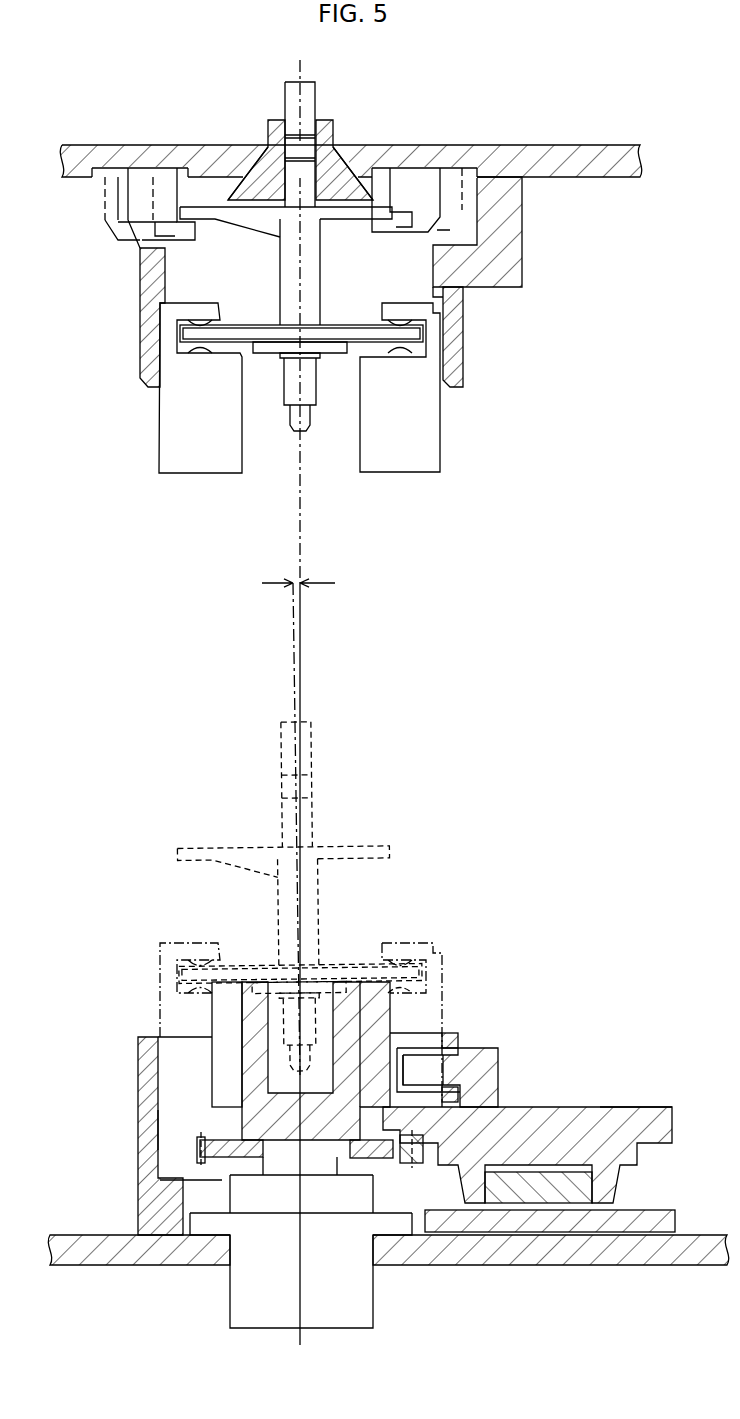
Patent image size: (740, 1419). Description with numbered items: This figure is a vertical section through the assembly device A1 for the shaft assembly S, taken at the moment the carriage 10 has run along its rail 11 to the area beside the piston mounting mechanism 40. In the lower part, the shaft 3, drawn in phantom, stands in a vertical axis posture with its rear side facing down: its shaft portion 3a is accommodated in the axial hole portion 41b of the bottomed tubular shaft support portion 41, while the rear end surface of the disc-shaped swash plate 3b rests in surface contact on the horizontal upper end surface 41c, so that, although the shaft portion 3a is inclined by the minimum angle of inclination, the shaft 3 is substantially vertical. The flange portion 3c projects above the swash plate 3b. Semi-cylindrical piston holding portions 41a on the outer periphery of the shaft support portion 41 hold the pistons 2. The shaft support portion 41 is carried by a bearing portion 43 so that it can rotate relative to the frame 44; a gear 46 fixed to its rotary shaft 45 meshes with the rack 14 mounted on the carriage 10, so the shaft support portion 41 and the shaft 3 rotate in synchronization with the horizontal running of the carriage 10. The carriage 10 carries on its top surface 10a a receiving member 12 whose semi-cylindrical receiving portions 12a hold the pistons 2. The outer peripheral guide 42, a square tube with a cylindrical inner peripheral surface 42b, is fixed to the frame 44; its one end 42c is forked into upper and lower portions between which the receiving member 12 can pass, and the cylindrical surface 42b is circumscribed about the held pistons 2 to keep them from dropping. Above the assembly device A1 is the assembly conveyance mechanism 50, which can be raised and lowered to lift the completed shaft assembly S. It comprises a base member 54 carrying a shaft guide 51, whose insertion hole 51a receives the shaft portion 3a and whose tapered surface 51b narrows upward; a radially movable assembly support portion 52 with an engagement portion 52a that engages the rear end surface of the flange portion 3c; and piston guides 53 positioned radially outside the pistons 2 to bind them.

The piston 2 is at (172, 428).
The shaft 3 is at (296, 576).
The shaft portion 3a is at (318, 296).
The swash plate 3b is at (247, 327).
The flange portion 3c is at (240, 220).
The carriage 10 is at (587, 1096).
The top surface 10a is at (647, 1106).
The rail 11 is at (560, 1203).
The receiving member 12 is at (498, 1090).
The receiving portion 12a is at (436, 1070).
The rack 14 is at (413, 1163).
The piston mounting mechanism 40 is at (107, 1033).
The shaft support portion 41 is at (253, 1058).
The piston holding portion 41a is at (240, 1078).
The hole portion 41b is at (350, 1010).
The upper end surface 41c is at (368, 968).
The outer peripheral guide 42 is at (140, 1115).
The inner peripheral surface 42b is at (163, 1130).
The one end 42c is at (458, 1040).
The bearing portion 43 is at (240, 1290).
The frame 44 is at (482, 1255).
The rotary shaft 45 is at (282, 1167).
The gear 46 is at (222, 1153).
The assembly conveyance mechanism 50 is at (588, 243).
The shaft guide 51 is at (326, 128).
The insertion hole 51a is at (292, 135).
The tapered surface 51b is at (282, 183).
The assembly support portion 52 is at (141, 172).
The engagement portion 52a is at (180, 220).
The piston guide 53 is at (142, 332).
The base member 54 is at (519, 150).
The shaft assembly S is at (323, 449).
The assembly device A1 is at (579, 930).